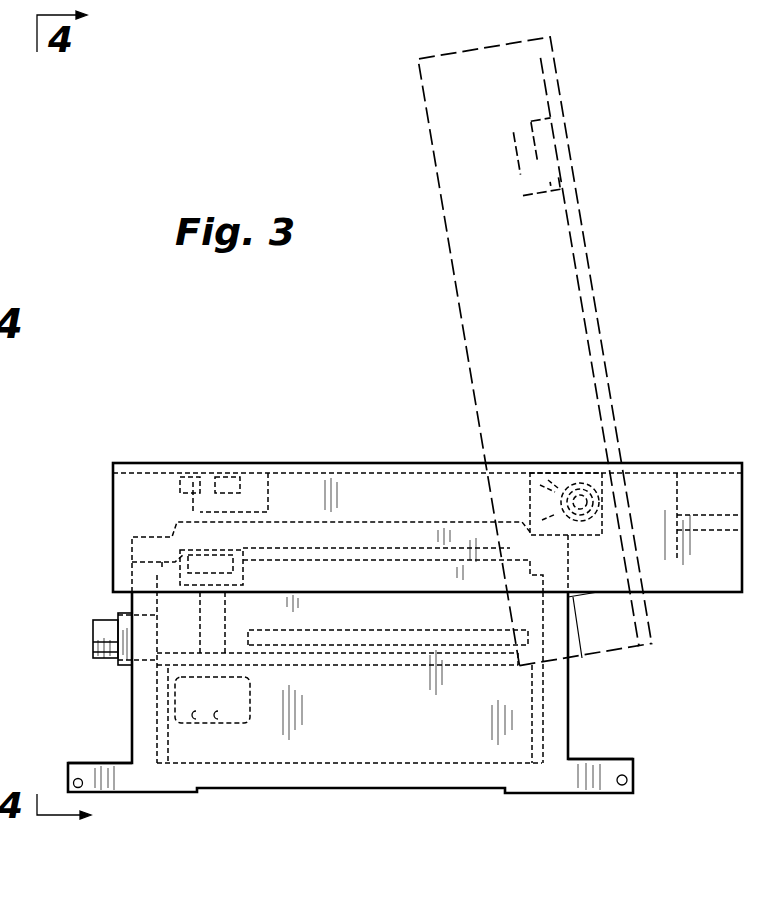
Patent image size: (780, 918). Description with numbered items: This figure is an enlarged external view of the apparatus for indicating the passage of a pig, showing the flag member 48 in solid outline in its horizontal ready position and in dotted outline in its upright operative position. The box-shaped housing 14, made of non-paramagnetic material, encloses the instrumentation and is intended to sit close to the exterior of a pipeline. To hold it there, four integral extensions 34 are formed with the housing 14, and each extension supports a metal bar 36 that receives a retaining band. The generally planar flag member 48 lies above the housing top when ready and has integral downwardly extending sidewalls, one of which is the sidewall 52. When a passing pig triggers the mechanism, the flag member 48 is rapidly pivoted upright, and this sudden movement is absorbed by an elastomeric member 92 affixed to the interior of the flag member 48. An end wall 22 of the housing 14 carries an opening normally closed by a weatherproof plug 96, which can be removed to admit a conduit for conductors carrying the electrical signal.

The housing 14 is at (684, 677).
The end wall 22 is at (130, 696).
The integral extensions 34 is at (102, 772).
The metal bar 36 is at (76, 780).
The flag member 48 is at (317, 460).
The sidewall 52 is at (647, 517).
The elastomeric member 92 is at (714, 492).
The plug 96 is at (100, 650).